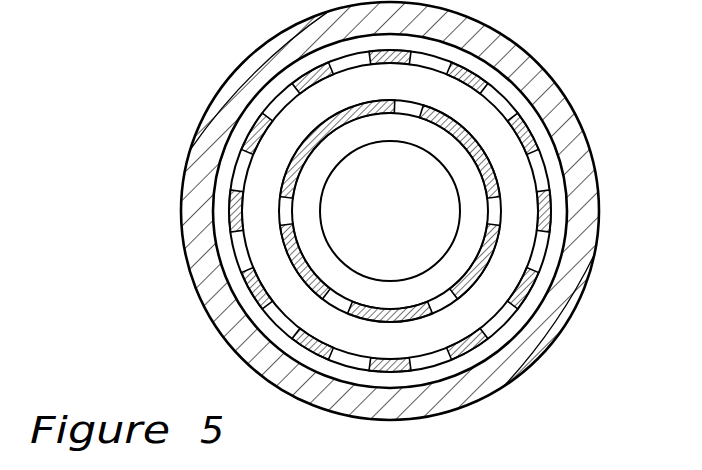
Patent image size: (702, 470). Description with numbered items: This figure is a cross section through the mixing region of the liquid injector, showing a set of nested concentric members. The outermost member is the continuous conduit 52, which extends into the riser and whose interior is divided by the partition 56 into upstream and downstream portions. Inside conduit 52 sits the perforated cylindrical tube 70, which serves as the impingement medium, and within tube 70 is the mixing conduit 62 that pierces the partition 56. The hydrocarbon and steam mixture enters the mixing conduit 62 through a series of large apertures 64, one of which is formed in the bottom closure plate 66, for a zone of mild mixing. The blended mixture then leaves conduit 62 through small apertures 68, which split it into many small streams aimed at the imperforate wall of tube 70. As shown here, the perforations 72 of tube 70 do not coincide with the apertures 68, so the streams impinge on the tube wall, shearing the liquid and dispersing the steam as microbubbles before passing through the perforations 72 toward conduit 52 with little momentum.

The continuous conduit 52 is at (371, 211).
The partition 56 is at (419, 208).
The mixing conduit 62 is at (461, 211).
The large apertures 64 is at (390, 211).
The bottom closure plate 66 is at (390, 211).
The small apertures 68 is at (390, 211).
The perforated cylindrical tube 70 is at (338, 211).
The perforations 72 is at (335, 211).